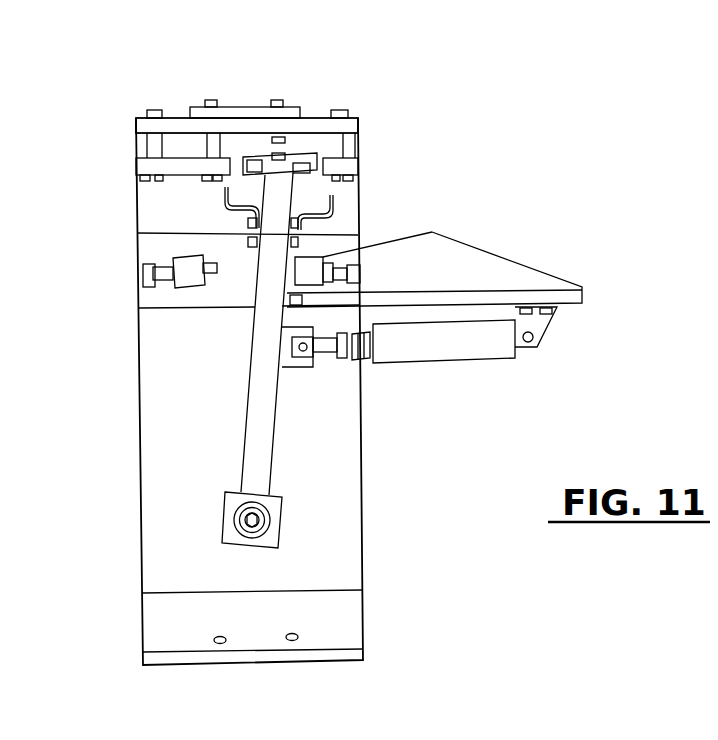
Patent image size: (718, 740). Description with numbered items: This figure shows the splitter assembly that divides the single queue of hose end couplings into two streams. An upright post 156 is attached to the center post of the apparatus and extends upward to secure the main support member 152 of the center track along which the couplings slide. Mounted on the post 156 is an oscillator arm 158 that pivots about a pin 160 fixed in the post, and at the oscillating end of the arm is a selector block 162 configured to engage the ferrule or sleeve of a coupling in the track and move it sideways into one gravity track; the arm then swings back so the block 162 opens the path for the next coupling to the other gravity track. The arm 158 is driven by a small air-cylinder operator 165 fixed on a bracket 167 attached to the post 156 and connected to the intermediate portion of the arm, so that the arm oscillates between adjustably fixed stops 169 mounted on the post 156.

The support member 152 is at (252, 104).
The post 156 is at (345, 452).
The oscillator arm 158 is at (258, 382).
The pin 160 is at (245, 520).
The selector block 162 is at (290, 160).
The air-cylinder operator 165 is at (425, 353).
The bracket 167 is at (510, 267).
The adjustably fixed stops 169 is at (178, 262).